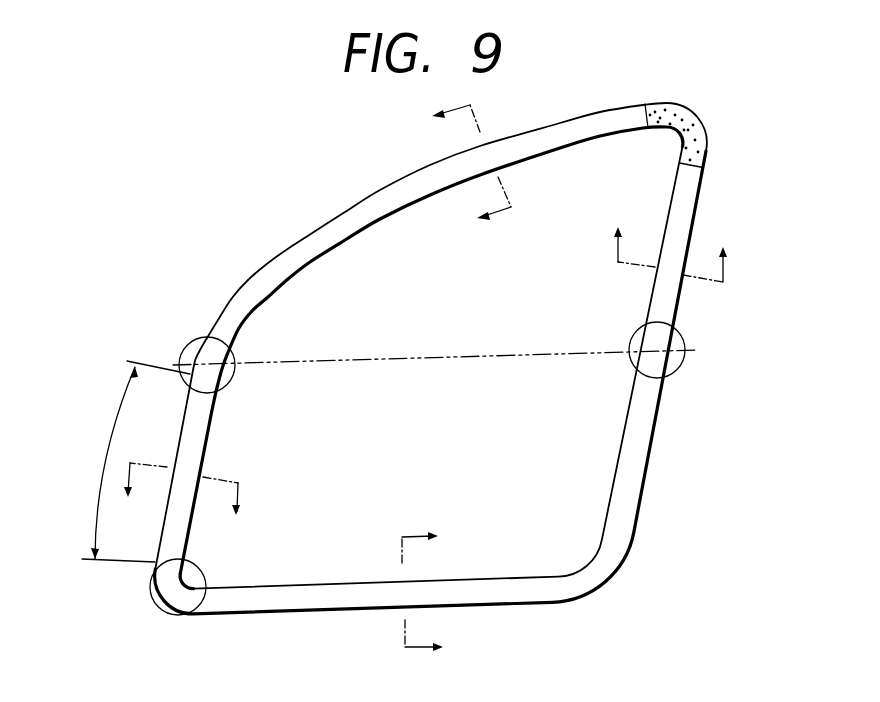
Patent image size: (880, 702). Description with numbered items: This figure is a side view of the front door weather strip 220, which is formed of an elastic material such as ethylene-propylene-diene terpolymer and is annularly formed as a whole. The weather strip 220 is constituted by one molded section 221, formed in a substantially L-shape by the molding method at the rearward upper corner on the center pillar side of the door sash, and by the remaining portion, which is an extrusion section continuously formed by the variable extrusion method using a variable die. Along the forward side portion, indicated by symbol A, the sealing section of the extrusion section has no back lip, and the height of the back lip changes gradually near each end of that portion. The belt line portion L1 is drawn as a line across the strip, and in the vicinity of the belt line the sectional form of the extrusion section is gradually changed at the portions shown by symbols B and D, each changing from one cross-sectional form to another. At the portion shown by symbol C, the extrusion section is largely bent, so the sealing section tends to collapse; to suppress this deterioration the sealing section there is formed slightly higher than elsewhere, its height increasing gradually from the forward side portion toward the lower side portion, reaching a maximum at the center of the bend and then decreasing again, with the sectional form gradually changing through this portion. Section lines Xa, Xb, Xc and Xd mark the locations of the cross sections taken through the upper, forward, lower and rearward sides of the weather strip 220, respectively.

The weather strip 220 is at (711, 226).
The molded section 221 is at (697, 122).
The belt line portion L1 is at (450, 352).
The forward side portion A is at (136, 461).
The portion B is at (237, 380).
The portion C is at (207, 582).
The portion D is at (630, 338).
The section Xa is at (454, 170).
The section Xb is at (180, 506).
The section Xc is at (438, 592).
The section Xd is at (673, 257).